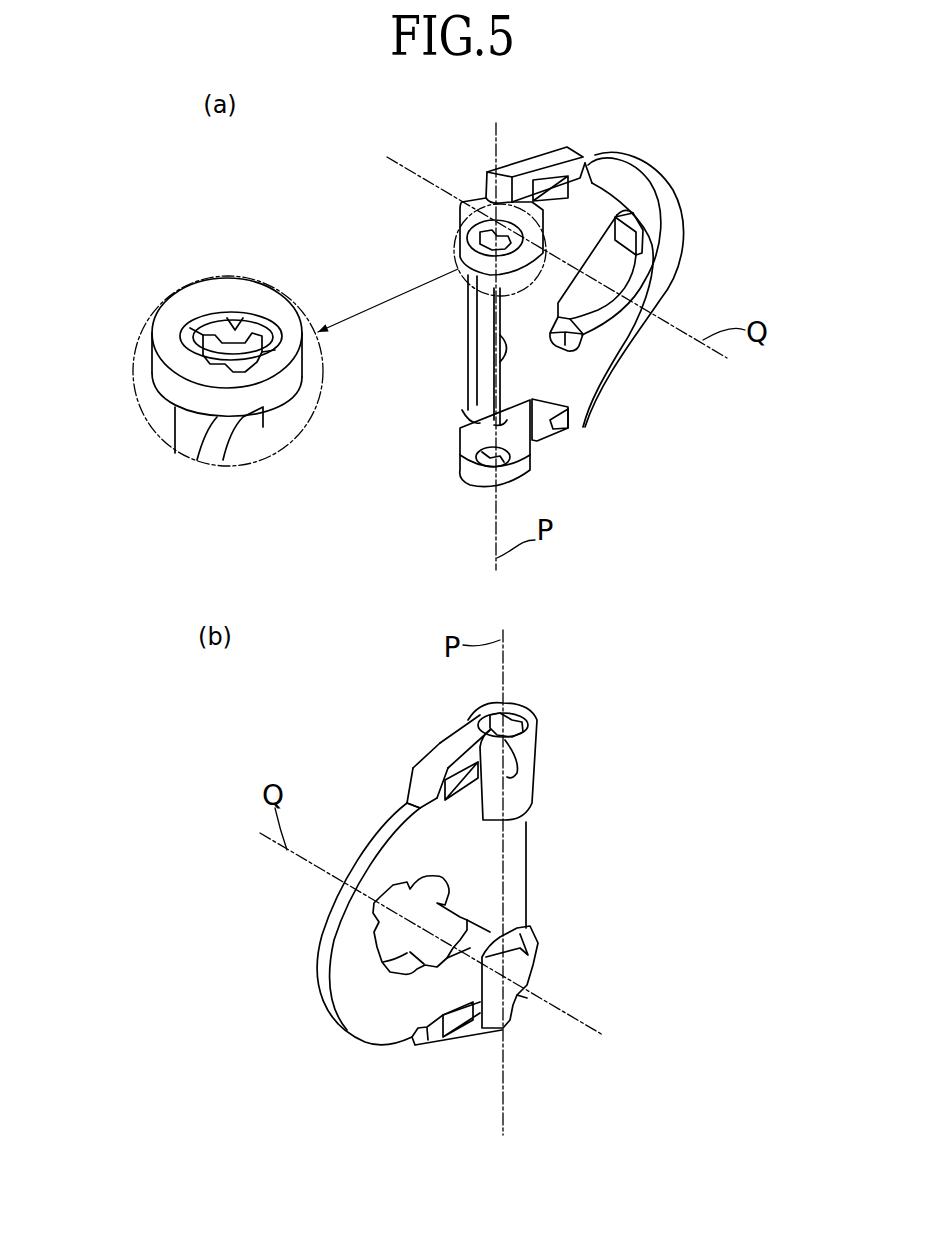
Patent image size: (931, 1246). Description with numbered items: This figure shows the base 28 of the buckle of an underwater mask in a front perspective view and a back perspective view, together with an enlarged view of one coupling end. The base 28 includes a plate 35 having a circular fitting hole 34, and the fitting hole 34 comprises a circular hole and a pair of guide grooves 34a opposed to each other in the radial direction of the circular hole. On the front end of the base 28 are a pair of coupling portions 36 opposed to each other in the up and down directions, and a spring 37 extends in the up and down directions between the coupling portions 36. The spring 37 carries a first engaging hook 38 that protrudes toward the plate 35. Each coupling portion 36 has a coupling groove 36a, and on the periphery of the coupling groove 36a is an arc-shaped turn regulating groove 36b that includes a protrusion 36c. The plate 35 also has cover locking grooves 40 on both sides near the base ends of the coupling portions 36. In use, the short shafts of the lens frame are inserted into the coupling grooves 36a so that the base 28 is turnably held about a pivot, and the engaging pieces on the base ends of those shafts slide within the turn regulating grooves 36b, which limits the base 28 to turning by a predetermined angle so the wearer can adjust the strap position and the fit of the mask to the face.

The base 28 is at (716, 193).
The fitting hole 34 is at (624, 278).
The guide grooves 34a is at (633, 232).
The plate 35 is at (588, 208).
The coupling portions 36 is at (473, 218).
The coupling grooves 36a is at (510, 250).
The turn regulating groove 36b is at (470, 234).
The protrusion 36c is at (230, 318).
The spring 37 is at (480, 340).
The first engaging hook 38 is at (483, 367).
The cover locking grooves 40 is at (550, 193).